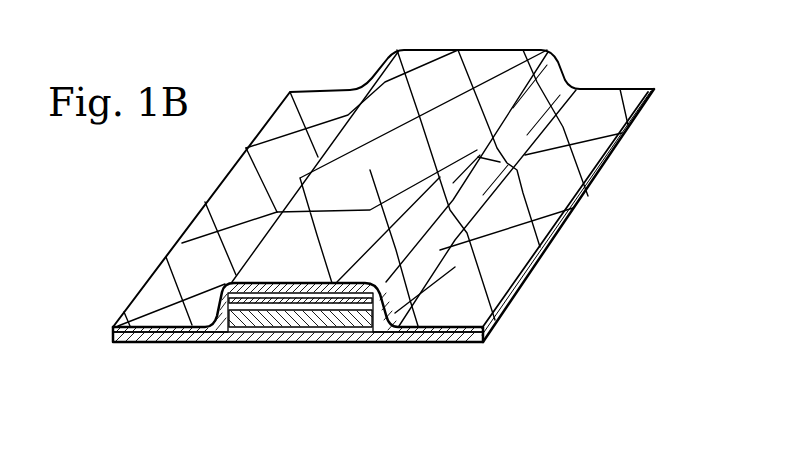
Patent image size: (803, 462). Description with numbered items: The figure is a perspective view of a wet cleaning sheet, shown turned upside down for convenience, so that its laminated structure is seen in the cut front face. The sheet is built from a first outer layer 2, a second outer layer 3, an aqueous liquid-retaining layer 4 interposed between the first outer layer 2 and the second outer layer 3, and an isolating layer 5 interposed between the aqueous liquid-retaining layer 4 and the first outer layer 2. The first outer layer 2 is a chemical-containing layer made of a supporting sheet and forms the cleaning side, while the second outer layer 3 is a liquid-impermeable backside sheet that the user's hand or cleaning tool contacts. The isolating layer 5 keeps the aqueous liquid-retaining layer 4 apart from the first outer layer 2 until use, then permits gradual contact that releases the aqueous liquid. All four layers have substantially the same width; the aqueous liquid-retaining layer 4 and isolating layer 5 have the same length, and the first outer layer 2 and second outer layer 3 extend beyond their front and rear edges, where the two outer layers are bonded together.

The first outer layer 2 is at (590, 107).
The second outer layer 3 is at (410, 342).
The aqueous liquid-retaining layer 4 is at (327, 322).
The isolating layer 5 is at (248, 298).